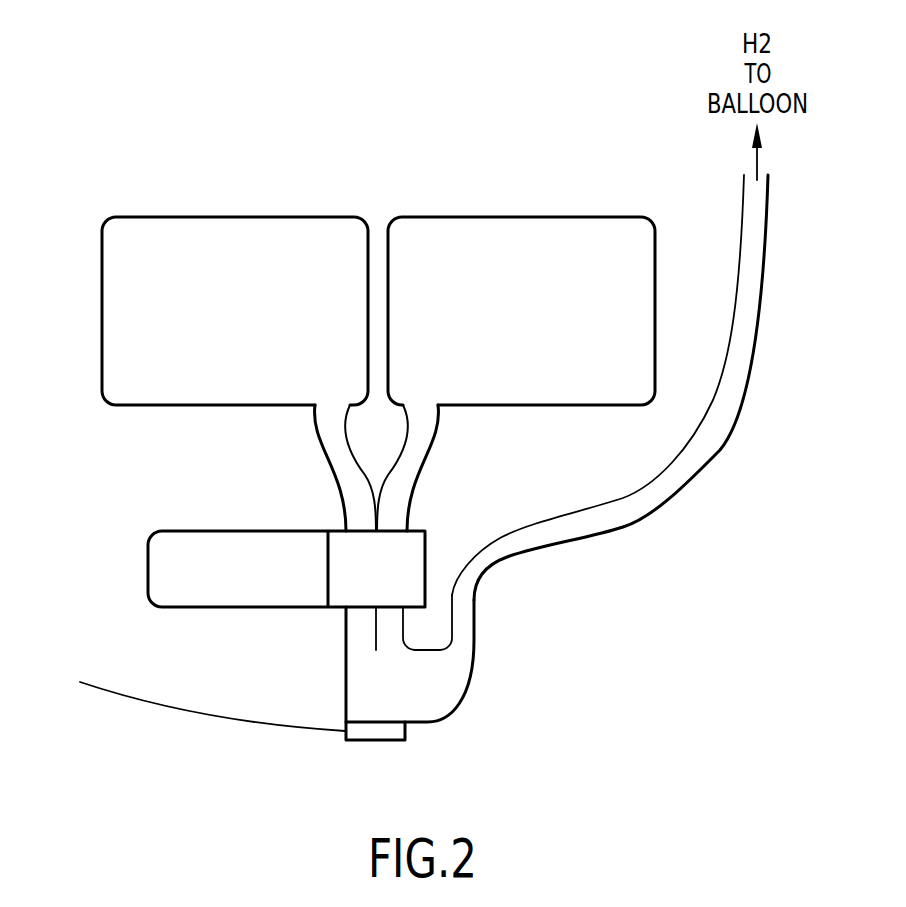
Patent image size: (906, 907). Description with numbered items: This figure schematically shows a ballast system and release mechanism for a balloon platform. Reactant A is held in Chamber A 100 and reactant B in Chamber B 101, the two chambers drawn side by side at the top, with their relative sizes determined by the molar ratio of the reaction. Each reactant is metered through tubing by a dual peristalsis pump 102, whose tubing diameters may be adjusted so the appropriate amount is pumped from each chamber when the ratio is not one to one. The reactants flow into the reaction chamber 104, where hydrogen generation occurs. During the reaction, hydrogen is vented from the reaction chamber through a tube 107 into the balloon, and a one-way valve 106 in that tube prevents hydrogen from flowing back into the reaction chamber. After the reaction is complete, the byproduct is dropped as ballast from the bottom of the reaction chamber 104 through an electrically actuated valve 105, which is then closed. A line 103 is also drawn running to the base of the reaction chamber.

The Chamber A 100 is at (192, 248).
The Chamber B 101 is at (510, 247).
The dual peristalsis pump 102 is at (213, 545).
The catheter 103 is at (192, 715).
The reaction chamber 104 is at (370, 694).
The electrically actuated valve 105 is at (375, 732).
The one-way valve 106 is at (463, 608).
The tube 107 is at (592, 525).